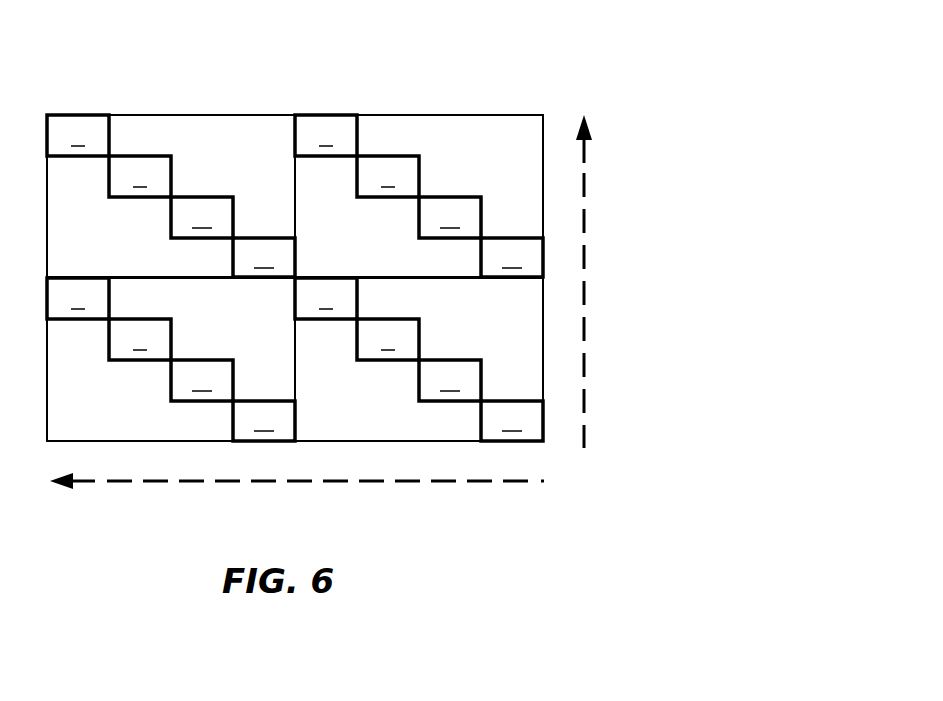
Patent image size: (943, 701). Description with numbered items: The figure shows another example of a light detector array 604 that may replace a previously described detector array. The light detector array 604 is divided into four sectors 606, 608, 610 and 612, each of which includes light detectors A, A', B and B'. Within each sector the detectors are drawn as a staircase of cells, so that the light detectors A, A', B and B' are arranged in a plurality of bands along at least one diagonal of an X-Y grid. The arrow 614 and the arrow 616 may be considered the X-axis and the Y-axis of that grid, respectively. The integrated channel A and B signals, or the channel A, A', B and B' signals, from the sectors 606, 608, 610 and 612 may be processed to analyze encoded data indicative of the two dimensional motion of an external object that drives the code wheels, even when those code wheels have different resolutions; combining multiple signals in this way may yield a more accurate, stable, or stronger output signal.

The light detector array 604 is at (672, 92).
The sector 606 is at (208, 166).
The sector 608 is at (456, 166).
The sector 610 is at (208, 329).
The sector 612 is at (456, 329).
The arrow 614 is at (404, 508).
The arrow 616 is at (611, 243).